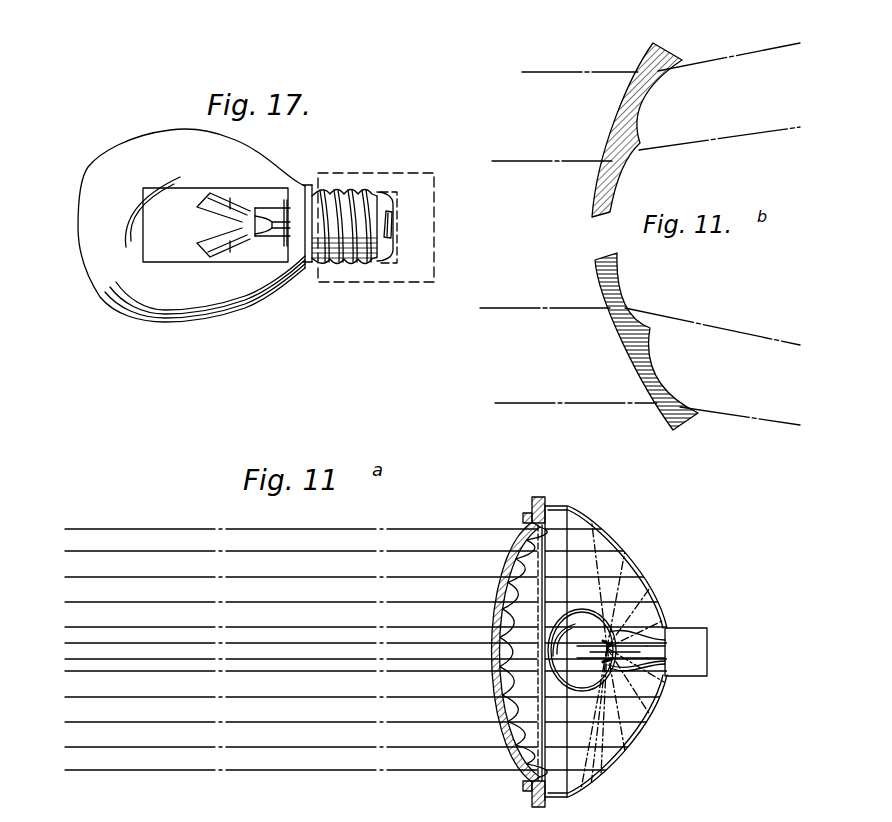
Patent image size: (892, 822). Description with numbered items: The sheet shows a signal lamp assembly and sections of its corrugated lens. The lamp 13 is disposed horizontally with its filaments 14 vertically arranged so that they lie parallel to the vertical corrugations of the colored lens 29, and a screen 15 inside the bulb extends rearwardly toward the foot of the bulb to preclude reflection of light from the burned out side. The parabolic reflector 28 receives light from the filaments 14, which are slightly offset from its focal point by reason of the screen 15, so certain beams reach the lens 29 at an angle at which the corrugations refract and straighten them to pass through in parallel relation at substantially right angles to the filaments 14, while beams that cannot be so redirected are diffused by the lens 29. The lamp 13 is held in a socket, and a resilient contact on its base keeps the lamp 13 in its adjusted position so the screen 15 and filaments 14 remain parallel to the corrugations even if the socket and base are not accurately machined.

In FIG. 17, the incandescent lamp bulb 13 is at (137, 122).
In FIG. 11A, the incandescent lamp bulb 13 is at (650, 610).
In FIG. 17, the filaments 14 is at (200, 197).
In FIG. 17, the reflecting surface within bulb 15 is at (163, 262).
In FIG. 11A, the reflector 28 is at (640, 560).
In FIG. 11B, the colored lens 29 is at (623, 345).
In FIG. 11A, the colored lens 29 is at (532, 523).